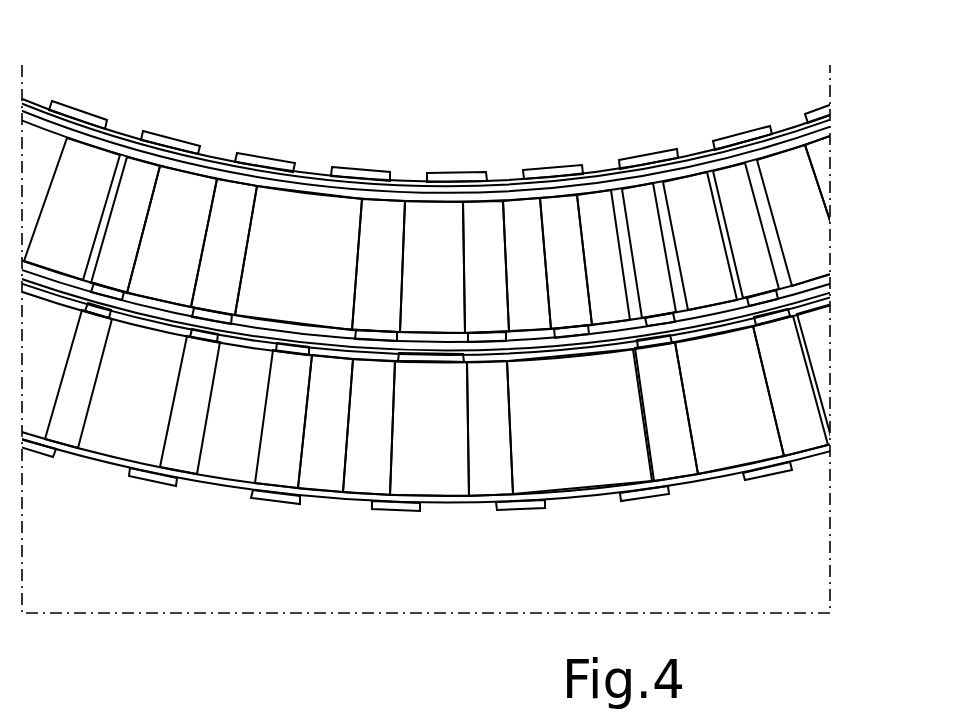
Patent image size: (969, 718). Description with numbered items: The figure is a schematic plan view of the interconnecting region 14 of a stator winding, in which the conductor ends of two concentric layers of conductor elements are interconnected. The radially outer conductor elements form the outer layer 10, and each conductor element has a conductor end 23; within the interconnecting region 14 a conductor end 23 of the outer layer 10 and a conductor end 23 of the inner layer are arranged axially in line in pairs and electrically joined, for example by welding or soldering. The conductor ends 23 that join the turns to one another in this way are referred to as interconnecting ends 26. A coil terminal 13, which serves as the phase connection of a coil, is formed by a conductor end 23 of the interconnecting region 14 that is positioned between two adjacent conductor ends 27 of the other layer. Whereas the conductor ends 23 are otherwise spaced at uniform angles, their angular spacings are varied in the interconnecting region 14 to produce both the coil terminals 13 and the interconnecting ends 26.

The outer layer 10 is at (849, 347).
The coil terminal 13 is at (567, 210).
The interconnecting region 14 is at (381, 566).
The conductor end 23 is at (546, 190).
The interconnecting end 26 is at (474, 297).
The adjacent conductor end 27 is at (371, 202).